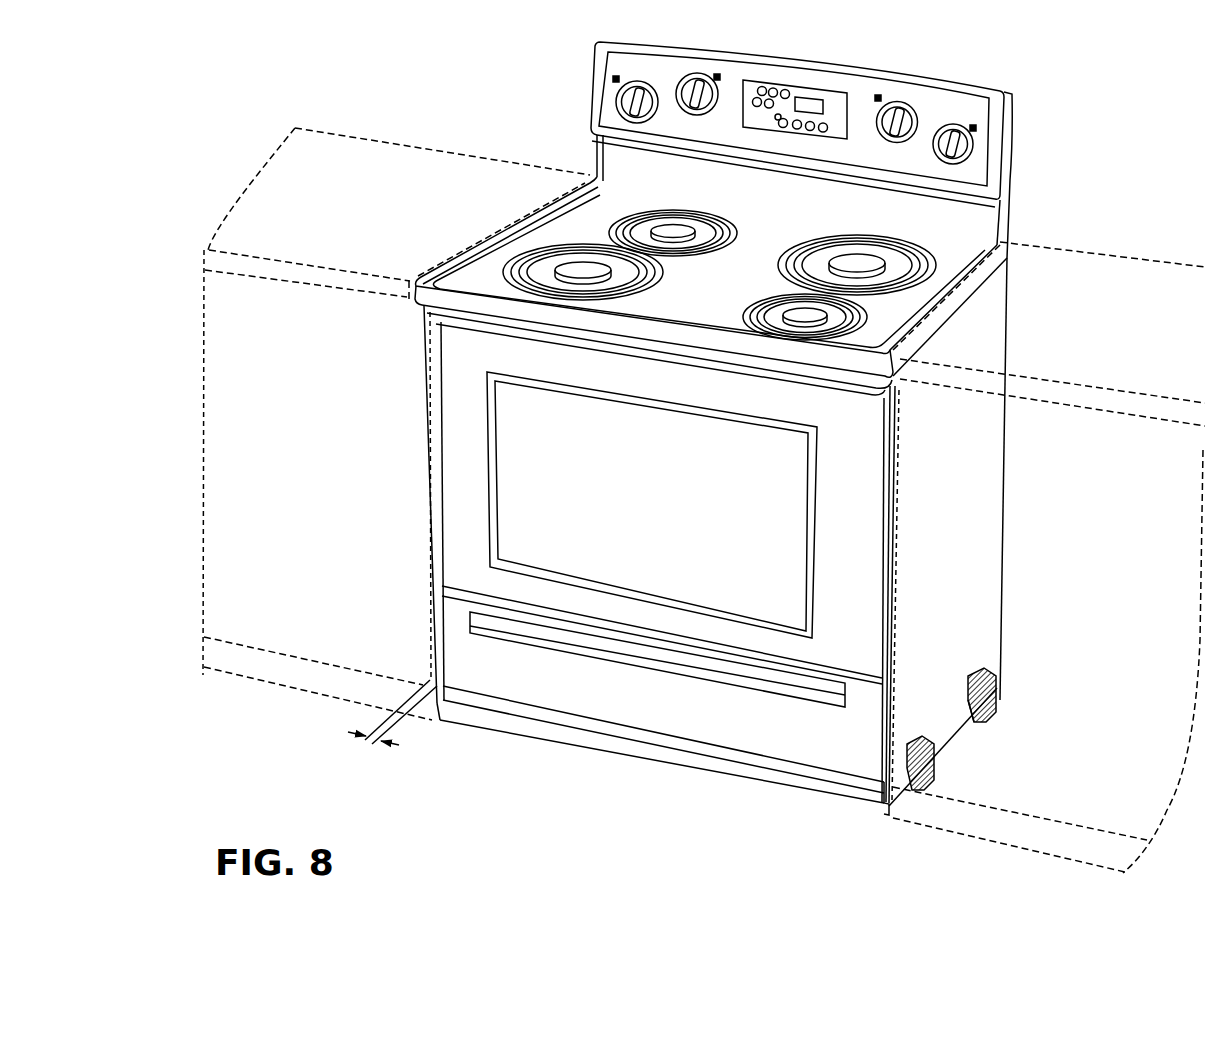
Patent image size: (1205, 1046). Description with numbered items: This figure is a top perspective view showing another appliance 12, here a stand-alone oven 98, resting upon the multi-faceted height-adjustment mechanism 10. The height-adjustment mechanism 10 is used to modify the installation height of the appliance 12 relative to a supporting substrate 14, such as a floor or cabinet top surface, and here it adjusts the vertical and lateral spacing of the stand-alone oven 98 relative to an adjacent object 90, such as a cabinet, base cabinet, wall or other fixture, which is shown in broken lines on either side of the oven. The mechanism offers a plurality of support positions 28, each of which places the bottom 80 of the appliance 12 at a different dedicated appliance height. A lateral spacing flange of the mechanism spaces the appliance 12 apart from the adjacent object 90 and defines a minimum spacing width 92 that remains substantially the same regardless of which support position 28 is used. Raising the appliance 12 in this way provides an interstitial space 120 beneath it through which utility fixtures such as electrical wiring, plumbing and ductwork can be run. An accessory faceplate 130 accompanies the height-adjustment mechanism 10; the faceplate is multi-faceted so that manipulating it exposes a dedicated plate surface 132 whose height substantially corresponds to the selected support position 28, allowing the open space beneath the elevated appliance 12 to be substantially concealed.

The height-adjustment mechanism 10 is at (1000, 767).
The appliance 12 is at (729, 475).
The supporting substrate 14 is at (553, 838).
The support positions 28 is at (996, 718).
The bottom of the appliance 80 is at (948, 738).
The adjacent object 90 is at (1102, 277).
The minimum spacing width 92 is at (366, 746).
The stand-alone oven 98 is at (578, 74).
The interstitial space 120 is at (958, 737).
The accessory faceplate 130 is at (655, 760).
The dedicated plate surface 132 is at (537, 733).